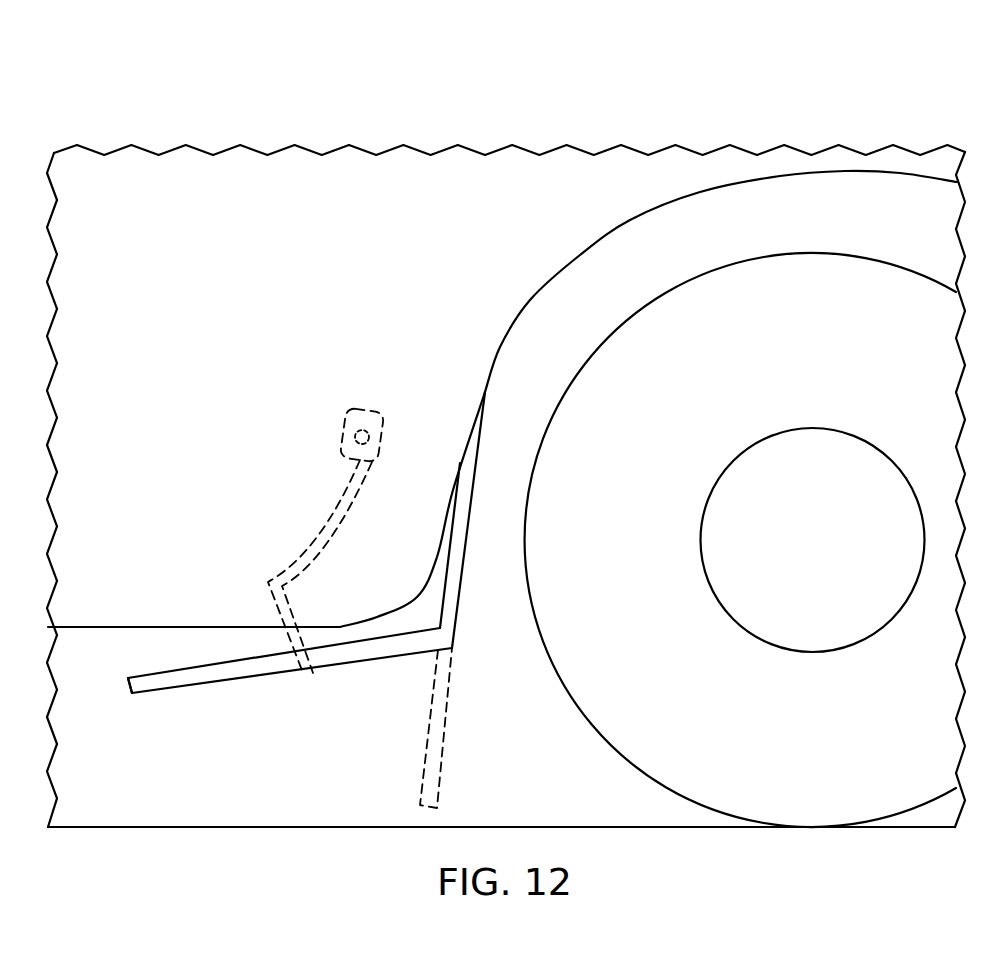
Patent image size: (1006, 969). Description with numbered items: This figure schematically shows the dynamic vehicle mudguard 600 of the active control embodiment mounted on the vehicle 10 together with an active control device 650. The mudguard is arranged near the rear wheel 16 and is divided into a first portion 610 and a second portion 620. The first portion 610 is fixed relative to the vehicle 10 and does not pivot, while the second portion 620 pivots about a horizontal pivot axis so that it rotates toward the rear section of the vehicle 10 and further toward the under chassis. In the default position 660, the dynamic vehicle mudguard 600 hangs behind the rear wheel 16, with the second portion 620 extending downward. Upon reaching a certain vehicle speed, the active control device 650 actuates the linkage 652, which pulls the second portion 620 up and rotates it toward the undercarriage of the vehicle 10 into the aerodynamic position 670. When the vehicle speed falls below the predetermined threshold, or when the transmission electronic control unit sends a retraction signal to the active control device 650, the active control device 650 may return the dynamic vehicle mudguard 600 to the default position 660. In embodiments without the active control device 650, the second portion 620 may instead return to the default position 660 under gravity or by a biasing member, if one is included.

The vehicle 10 is at (156, 140).
The rear wheel 16 is at (756, 841).
The dynamic vehicle mudguard 600 is at (502, 499).
The first portion 610 is at (475, 480).
The second portion 620 is at (326, 638).
The active control device 650 is at (386, 388).
The linkage 652 is at (300, 554).
The default position 660 is at (467, 730).
The aerodynamic position 670 is at (167, 700).